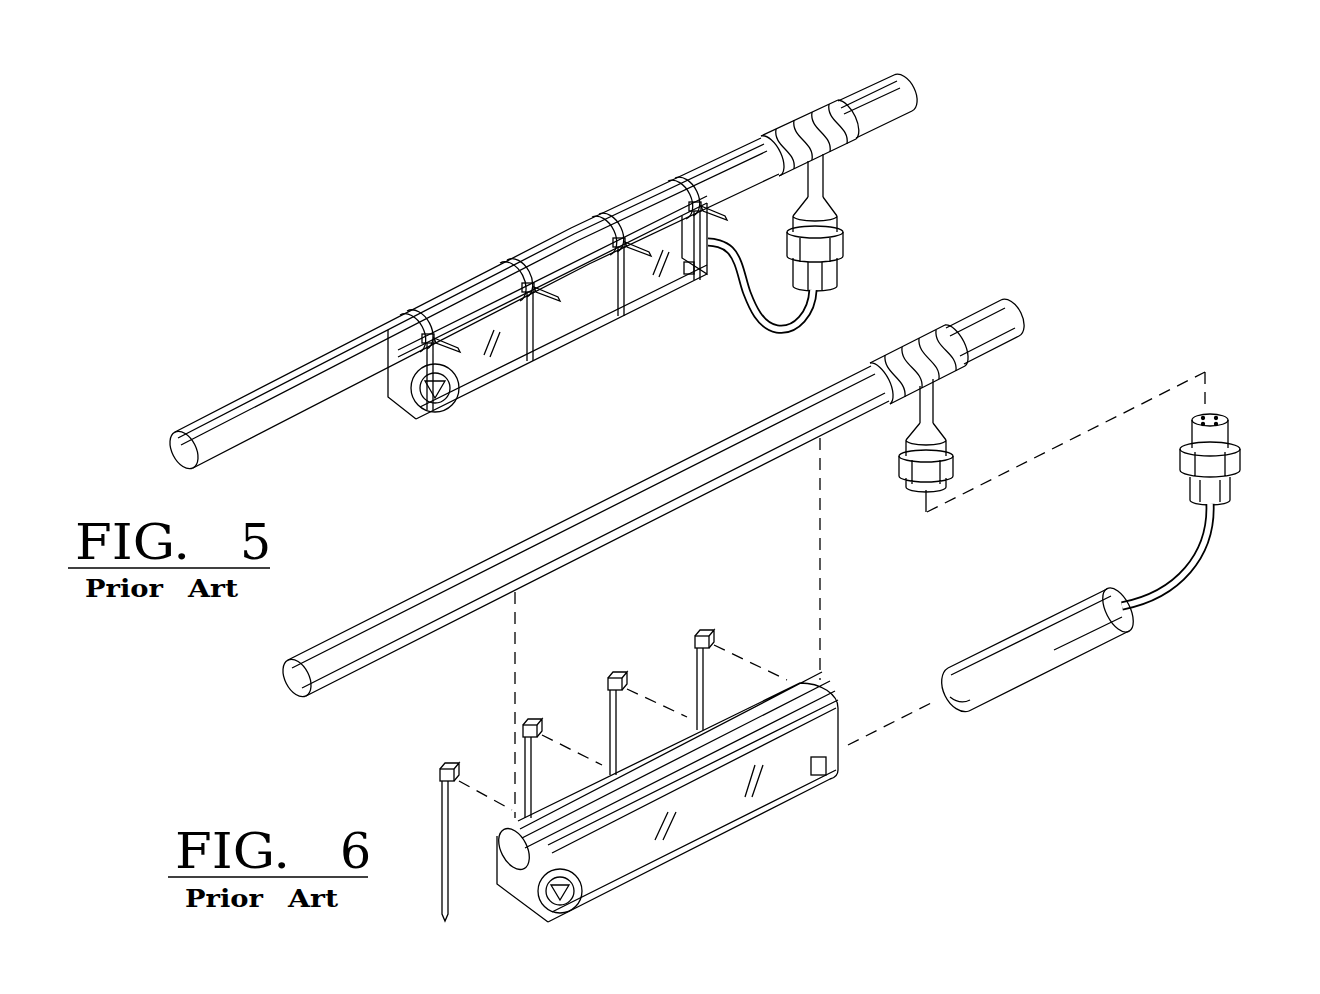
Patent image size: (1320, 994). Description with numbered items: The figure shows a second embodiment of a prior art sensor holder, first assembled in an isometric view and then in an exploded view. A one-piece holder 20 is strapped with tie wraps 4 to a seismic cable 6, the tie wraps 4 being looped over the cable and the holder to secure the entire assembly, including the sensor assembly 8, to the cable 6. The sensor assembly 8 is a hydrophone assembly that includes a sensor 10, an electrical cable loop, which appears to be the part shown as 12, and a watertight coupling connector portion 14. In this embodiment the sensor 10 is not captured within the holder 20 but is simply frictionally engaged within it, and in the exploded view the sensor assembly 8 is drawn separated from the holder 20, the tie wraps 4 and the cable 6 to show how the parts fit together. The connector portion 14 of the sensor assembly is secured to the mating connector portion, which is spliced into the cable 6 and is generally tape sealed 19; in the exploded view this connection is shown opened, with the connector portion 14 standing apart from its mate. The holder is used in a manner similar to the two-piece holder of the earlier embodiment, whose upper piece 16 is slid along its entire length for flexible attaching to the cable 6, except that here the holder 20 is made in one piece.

In FIG. 5, the tie wraps 4 is at (403, 316).
In FIG. 6, the tie wraps 4 is at (692, 640).
In FIG. 5, the seismic cable 6 is at (283, 378).
In FIG. 6, the seismic cable 6 is at (452, 578).
In FIG. 6, the sensor assembly 8 is at (1119, 523).
In FIG. 6, the sensor 10 is at (1017, 637).
In FIG. 6, the cable 12 is at (1183, 585).
In FIG. 5, the connector portion 14 is at (827, 270).
In FIG. 6, the connector portion 14 is at (1237, 457).
In FIG. 5, the upper piece 16 is at (840, 213).
In FIG. 6, the upper piece 16 is at (969, 445).
In FIG. 6, the tape-sealed mating connector portion 19 is at (923, 356).
In FIG. 6, the holder 20 is at (720, 820).